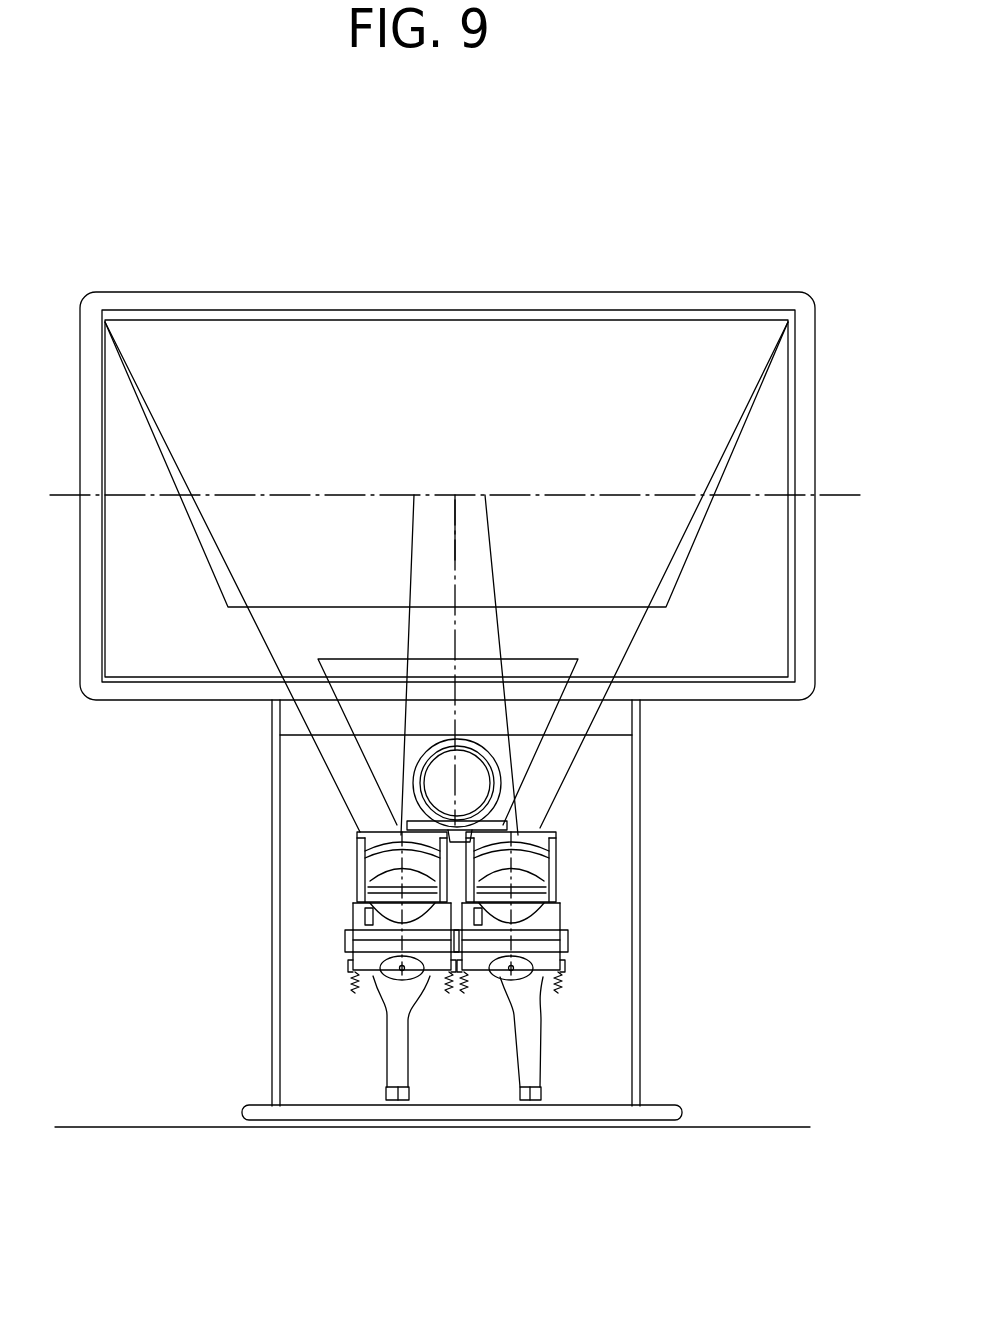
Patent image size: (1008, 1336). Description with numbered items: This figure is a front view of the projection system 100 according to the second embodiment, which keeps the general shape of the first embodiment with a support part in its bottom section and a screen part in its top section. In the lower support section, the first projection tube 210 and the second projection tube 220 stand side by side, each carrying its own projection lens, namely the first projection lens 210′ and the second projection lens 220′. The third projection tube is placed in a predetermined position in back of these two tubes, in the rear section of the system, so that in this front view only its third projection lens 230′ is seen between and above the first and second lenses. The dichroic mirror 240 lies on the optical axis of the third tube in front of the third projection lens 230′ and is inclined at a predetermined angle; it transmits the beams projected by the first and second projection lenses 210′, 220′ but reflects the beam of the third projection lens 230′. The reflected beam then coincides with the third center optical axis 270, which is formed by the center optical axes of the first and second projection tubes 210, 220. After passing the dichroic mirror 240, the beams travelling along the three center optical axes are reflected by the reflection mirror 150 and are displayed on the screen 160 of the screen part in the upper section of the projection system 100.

The projection system 100 is at (172, 298).
The screen 160 is at (620, 316).
The reflection mirror 150 is at (727, 351).
The third center optical axis 270 is at (455, 531).
The dichroic mirror 240 is at (531, 669).
The third projection lens 230′ is at (498, 766).
The first projection lens 210′ is at (398, 870).
The second projection lens 220′ is at (533, 866).
The first projection tube 210 is at (397, 1078).
The second projection tube 220 is at (528, 1078).